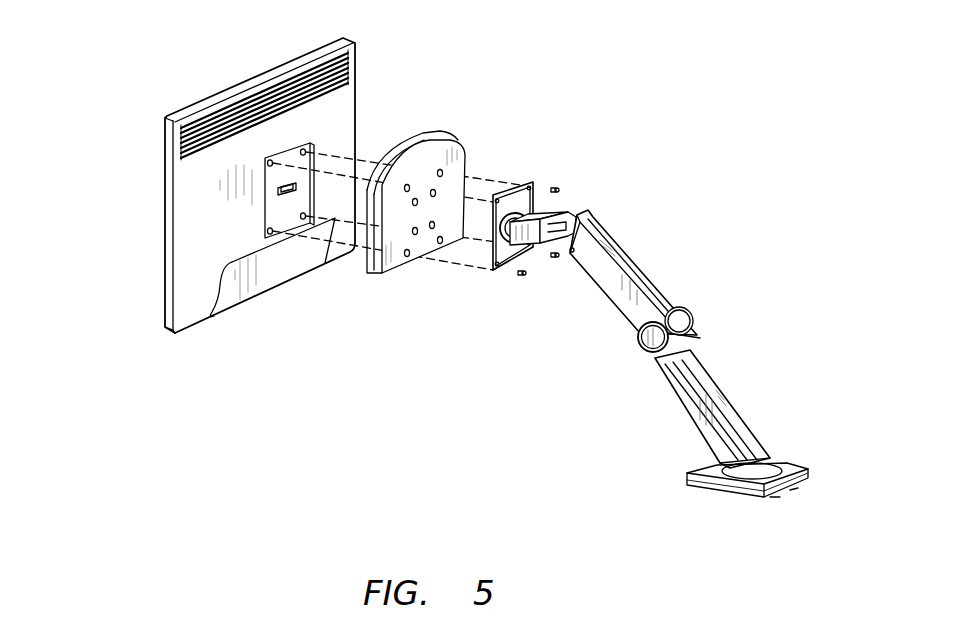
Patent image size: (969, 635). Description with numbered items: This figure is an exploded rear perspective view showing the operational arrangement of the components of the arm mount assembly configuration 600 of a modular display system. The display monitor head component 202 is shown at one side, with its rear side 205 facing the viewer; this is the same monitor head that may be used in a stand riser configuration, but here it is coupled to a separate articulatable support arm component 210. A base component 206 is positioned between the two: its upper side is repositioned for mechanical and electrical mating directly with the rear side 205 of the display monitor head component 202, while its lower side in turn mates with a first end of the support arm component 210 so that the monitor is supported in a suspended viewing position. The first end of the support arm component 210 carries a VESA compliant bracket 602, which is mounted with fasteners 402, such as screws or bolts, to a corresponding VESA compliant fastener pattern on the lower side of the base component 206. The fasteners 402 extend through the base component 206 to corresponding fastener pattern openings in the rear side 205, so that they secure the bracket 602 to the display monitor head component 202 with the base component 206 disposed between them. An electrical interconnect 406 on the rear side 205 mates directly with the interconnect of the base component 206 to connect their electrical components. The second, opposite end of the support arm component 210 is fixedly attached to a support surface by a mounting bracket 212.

The arm mount assembly configuration 600 is at (137, 42).
The display monitor head component 202 is at (283, 217).
The rear side 205 is at (338, 130).
The electrical interconnect 406 is at (284, 196).
The base component 206 is at (370, 276).
The VESA compliant bracket 602 is at (528, 182).
The fasteners 402 is at (536, 188).
The support arm component 210 is at (622, 322).
The mounting bracket 212 is at (800, 463).